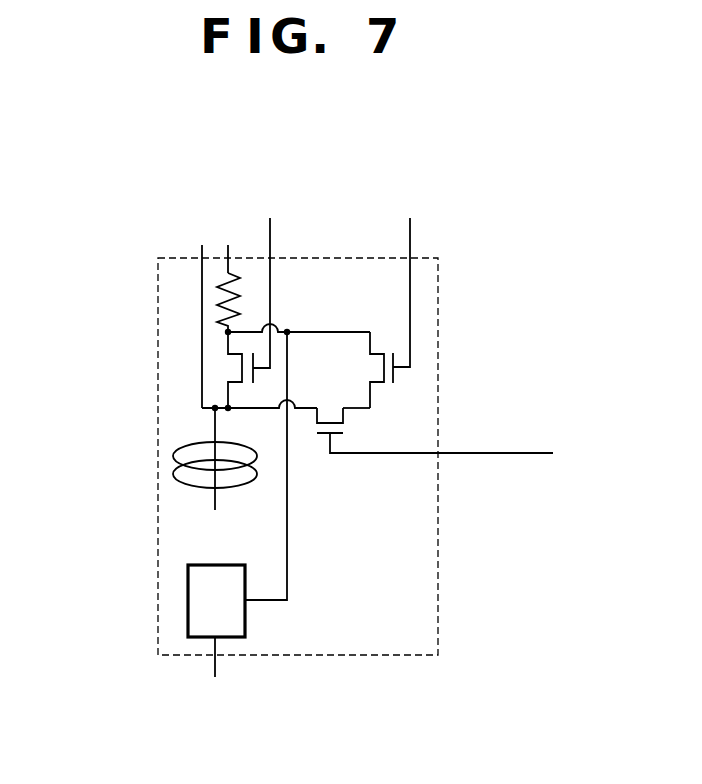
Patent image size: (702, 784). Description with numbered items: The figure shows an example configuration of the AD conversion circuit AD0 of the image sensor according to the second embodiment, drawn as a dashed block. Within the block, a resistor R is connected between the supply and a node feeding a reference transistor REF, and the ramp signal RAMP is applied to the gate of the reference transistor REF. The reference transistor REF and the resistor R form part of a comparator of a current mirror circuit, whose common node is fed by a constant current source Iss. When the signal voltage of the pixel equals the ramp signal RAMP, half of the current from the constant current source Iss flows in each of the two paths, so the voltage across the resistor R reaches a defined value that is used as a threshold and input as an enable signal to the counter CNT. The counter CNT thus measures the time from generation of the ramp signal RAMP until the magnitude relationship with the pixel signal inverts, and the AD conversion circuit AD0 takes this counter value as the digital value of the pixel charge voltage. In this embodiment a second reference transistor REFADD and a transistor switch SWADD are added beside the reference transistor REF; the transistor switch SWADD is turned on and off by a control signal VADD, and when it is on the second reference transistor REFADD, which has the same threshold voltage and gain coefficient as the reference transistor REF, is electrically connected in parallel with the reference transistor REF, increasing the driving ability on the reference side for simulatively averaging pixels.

The AD conversion circuit AD0 is at (158, 270).
The ramp signal RAMP is at (339, 278).
The resistor R is at (228, 322).
The reference transistor REF is at (228, 364).
The second reference transistor REFADD is at (400, 375).
The transistor switch SWADD is at (348, 421).
The control signal VADD is at (475, 451).
The constant current source Iss is at (178, 450).
The counter CNT is at (188, 577).